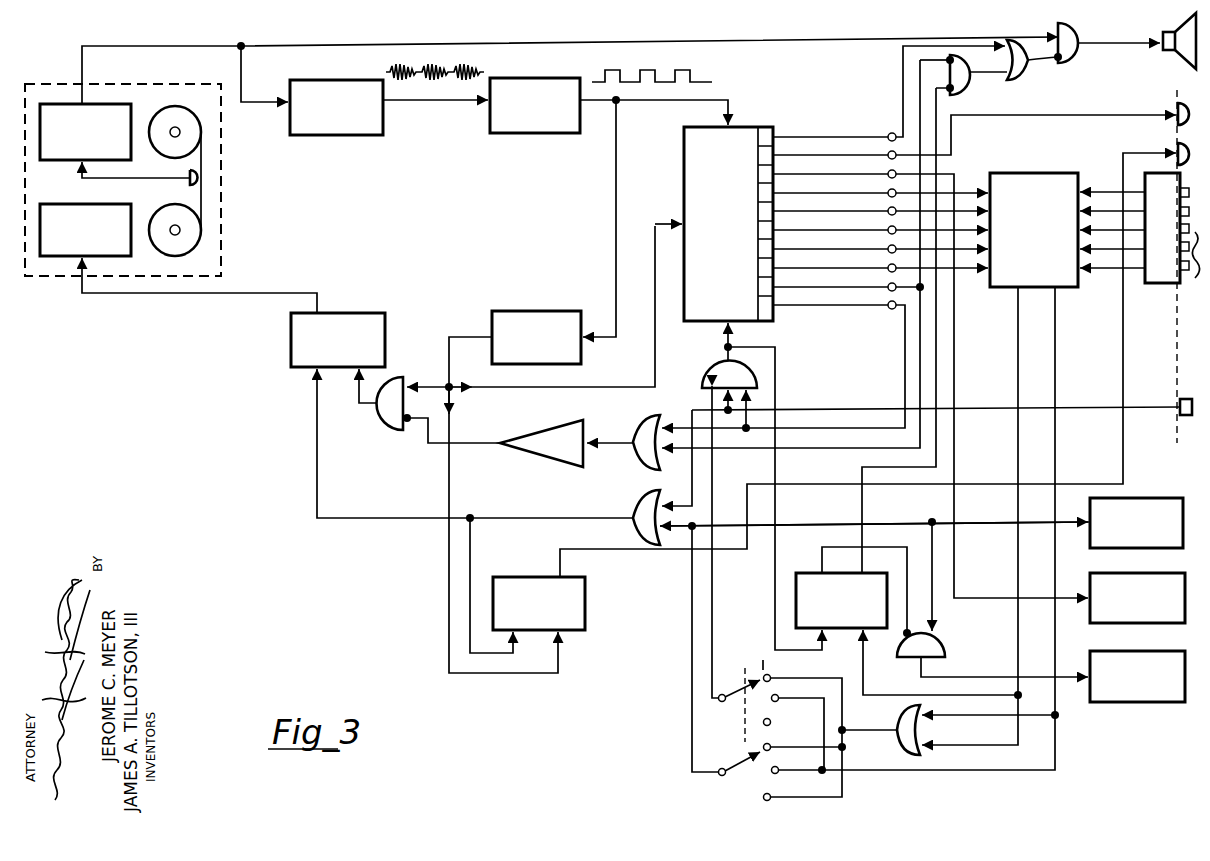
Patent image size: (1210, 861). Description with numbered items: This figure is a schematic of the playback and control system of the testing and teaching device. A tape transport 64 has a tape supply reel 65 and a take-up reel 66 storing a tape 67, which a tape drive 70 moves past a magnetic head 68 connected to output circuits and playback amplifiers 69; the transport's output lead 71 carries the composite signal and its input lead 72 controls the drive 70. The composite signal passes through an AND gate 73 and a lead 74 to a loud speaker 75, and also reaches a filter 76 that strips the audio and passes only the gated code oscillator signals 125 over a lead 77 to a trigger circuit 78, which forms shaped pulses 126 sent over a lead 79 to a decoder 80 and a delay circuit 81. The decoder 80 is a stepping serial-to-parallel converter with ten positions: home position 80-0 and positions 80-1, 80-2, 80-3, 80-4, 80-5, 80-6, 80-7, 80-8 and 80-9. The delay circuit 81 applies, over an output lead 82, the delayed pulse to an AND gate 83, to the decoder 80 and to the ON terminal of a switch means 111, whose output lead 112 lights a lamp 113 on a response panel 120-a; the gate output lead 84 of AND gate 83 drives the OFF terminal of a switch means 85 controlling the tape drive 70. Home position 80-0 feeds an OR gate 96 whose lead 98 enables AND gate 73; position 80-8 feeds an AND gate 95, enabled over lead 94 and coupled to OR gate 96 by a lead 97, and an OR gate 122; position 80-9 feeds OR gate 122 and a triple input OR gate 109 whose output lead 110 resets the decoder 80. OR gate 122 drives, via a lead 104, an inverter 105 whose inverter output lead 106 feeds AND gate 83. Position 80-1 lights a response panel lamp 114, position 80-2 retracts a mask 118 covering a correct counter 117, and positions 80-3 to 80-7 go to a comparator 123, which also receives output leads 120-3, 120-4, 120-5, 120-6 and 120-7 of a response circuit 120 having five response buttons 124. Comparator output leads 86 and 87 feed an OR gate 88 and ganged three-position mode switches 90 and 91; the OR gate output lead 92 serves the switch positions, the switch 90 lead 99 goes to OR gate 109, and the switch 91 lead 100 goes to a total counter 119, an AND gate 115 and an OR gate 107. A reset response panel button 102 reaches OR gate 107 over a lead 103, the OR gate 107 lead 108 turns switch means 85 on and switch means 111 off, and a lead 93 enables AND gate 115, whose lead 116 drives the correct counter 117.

The tape transport 64 is at (221, 205).
The tape supply reel 65 is at (192, 106).
The take-up reel 66 is at (163, 258).
The tape 67 is at (203, 163).
The magnetic head 68 is at (188, 186).
The output circuits and playback amplifiers 69 is at (131, 157).
The tape drive 70 is at (98, 200).
The output lead 71 is at (169, 43).
The input lead 72 is at (181, 306).
The AND gate 73 is at (1078, 36).
The lead 74 is at (1123, 44).
The loud speaker 75 is at (1178, 56).
The filter 76 is at (302, 76).
The lead 77 is at (446, 104).
The trigger circuit 78 is at (574, 74).
The lead 79 is at (608, 104).
The decoder 80 is at (762, 122).
The decoder output position 0 80-0 is at (811, 129).
The decoder output position 1 80-1 is at (811, 147).
The decoder output position 2 80-2 is at (811, 166).
The decoder output position 3 80-3 is at (811, 185).
The decoder output position 4 80-4 is at (811, 203).
The decoder output position 5 80-5 is at (811, 222).
The decoder output position 6 80-6 is at (811, 241).
The decoder output position 7 80-7 is at (811, 260).
The decoder output position 8 80-8 is at (811, 279).
The decoder output position 9 80-9 is at (811, 297).
The delay circuit 81 is at (574, 308).
The output lead 82 is at (474, 336).
The AND gate 83 is at (382, 434).
The gate output lead 84 is at (342, 398).
The switch means 85 is at (378, 308).
The comparator output lead 86 is at (1014, 337).
The comparator output lead 87 is at (1060, 345).
The OR gate 88 is at (896, 754).
The mode switch 90 is at (756, 718).
The mode switch 91 is at (758, 793).
The output lead 92 is at (828, 676).
The lead 93 is at (904, 544).
The lead 94 is at (934, 168).
The AND gate 95 is at (975, 88).
The OR gate 96 is at (1002, 82).
The AND gate output line 97 is at (998, 68).
The lead 98 is at (1040, 66).
The lead 99 is at (714, 628).
The lead 100 is at (730, 346).
The reset response panel button 102 is at (1174, 402).
The lead 103 is at (1048, 404).
The lead 104 is at (622, 450).
The inverter 105 is at (528, 464).
The inverter output lead 106 is at (492, 449).
The OR gate 107 is at (632, 503).
The lead 108 is at (312, 396).
The triple input OR gate 109 is at (704, 380).
The output lead 110 is at (822, 640).
The switch means 111 is at (588, 596).
The output lead 112 is at (1154, 138).
The lamp 113 is at (1188, 149).
The response panel lamp 114 is at (1188, 104).
The AND gate 115 is at (944, 656).
The lead 116 is at (1030, 670).
The correct counter 117 is at (1132, 649).
The mask 118 is at (1132, 572).
The total counter 119 is at (1132, 496).
The response circuit 120 is at (1144, 288).
The response panel 120-a is at (1176, 322).
The response circuit output lead 120-3 is at (1096, 184).
The response circuit output lead 120-4 is at (1096, 203).
The response circuit output lead 120-5 is at (1096, 222).
The response circuit output lead 120-6 is at (1096, 241).
The response circuit output lead 120-7 is at (1096, 260).
The OR gate 122 is at (636, 424).
The comparator 123 is at (1052, 166).
The response buttons 124 is at (1196, 266).
The gated code oscillator signals 125 is at (408, 57).
The pulses 126 is at (653, 66).